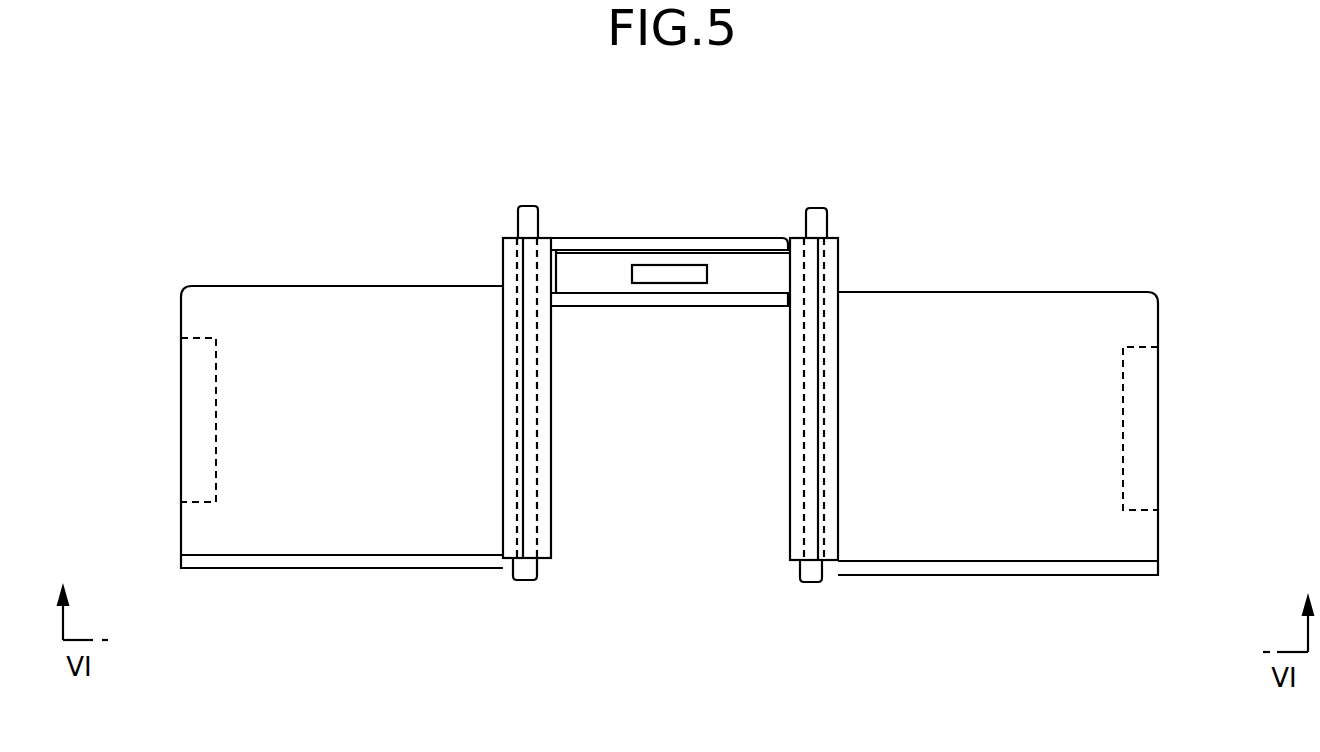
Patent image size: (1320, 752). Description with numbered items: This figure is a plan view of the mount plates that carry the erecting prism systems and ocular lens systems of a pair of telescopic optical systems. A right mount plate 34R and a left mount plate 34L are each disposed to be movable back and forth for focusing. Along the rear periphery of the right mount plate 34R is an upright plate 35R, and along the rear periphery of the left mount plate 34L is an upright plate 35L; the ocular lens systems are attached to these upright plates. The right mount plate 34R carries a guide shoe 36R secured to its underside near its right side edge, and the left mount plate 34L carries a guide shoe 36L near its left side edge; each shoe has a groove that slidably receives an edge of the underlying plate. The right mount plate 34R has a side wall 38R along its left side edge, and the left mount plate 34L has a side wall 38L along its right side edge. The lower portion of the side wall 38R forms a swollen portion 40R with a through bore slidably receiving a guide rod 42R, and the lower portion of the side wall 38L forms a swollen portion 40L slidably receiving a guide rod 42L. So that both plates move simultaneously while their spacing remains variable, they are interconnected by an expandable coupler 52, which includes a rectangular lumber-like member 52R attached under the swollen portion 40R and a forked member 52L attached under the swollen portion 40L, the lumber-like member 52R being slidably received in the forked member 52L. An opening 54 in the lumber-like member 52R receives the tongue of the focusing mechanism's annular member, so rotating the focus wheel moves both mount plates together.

The left mount plate 34L is at (268, 298).
The right mount plate 34R is at (1127, 303).
The upright plate 35L is at (192, 560).
The upright plate 35R is at (1150, 568).
The guide shoe 36L is at (197, 421).
The guide shoe 36R is at (1143, 421).
The side wall 38L is at (503, 440).
The side wall 38R is at (838, 418).
The swollen portion 40L is at (543, 512).
The swollen portion 40R is at (795, 518).
The guide rod 42L is at (522, 228).
The guide rod 42R is at (822, 216).
The expandable coupler 52 is at (650, 240).
The forked member 52L is at (606, 308).
The lumber-like member 52R is at (740, 285).
The opening 54 is at (656, 275).